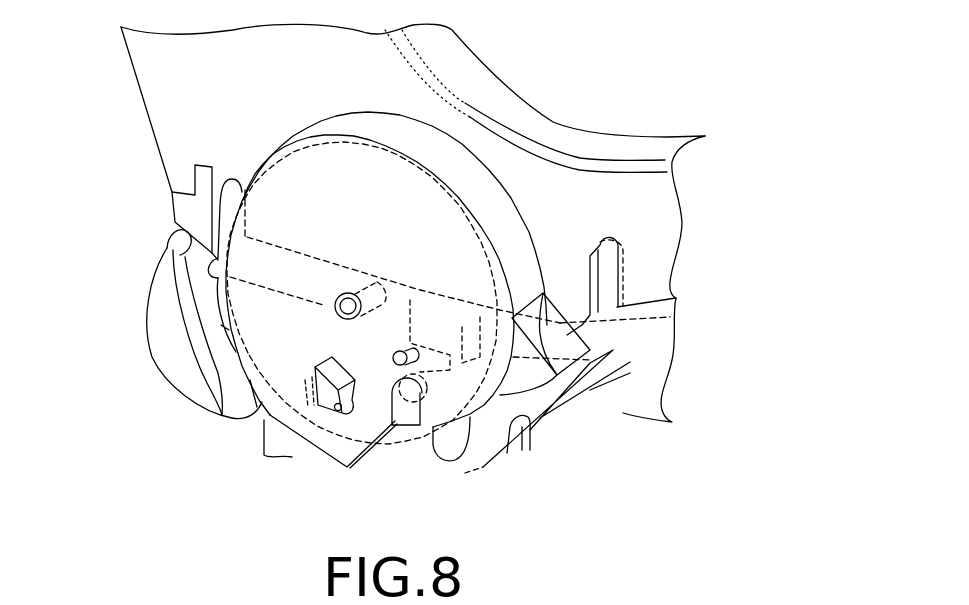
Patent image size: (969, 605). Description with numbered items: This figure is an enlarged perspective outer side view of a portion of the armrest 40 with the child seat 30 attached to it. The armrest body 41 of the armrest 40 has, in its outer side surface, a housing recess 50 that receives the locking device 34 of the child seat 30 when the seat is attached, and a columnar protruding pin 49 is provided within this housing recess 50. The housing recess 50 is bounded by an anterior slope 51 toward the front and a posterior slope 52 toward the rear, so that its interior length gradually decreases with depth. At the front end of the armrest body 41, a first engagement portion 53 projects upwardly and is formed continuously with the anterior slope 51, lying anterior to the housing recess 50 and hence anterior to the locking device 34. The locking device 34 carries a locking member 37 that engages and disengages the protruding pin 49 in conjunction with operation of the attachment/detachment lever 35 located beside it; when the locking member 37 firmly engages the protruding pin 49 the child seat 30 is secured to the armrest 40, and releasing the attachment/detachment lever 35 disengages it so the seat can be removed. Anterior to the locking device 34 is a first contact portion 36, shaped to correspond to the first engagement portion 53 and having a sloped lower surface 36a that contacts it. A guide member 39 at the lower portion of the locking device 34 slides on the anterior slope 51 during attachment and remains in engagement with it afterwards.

The child seat 30 is at (600, 83).
The locking device 34 is at (382, 125).
The attachment/detachment lever 35 is at (557, 310).
The first contact portion 36 is at (186, 210).
The sloped lower surface 36a is at (167, 248).
The locking member 37 is at (405, 428).
The guide member 39 is at (297, 432).
The armrest 40 is at (120, 300).
The armrest body 41 is at (618, 412).
The protruding pin 49 is at (383, 405).
The housing recess 50 is at (486, 433).
The anterior slope 51 is at (232, 418).
The posterior slope 52 is at (512, 428).
The first engagement portion 53 is at (192, 293).